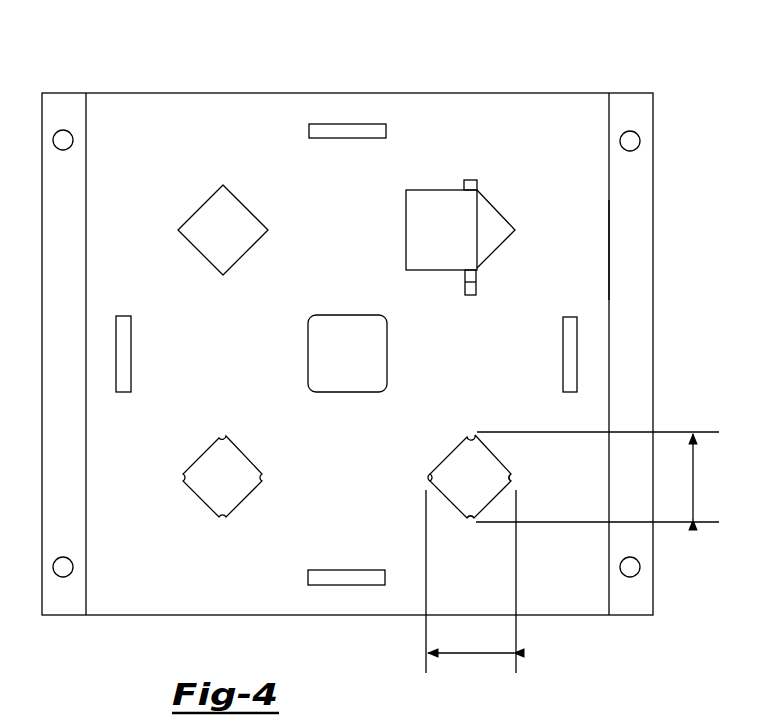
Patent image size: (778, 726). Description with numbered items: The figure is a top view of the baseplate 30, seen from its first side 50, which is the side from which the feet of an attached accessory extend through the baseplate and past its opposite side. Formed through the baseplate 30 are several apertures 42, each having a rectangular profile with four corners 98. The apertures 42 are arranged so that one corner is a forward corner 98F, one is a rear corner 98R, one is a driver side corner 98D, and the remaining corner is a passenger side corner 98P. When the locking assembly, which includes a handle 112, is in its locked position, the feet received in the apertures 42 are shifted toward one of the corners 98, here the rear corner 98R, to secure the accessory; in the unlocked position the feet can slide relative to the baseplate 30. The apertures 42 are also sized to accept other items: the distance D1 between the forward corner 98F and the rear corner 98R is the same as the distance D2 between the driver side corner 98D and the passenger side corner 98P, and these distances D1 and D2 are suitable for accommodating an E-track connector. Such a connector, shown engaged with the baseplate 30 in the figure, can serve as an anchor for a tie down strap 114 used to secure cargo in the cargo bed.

The baseplate 30 is at (497, 114).
The first side 50 is at (592, 252).
The apertures 42 is at (206, 229).
The tie down strap 114 is at (427, 250).
The handle 112 is at (478, 287).
The corners 98 is at (228, 437).
The driver side corner 98D is at (478, 436).
The rear corner 98R is at (425, 487).
The passenger side corner 98P is at (470, 522).
The forward corner 98F is at (516, 487).
The distance from forward corner to rear corner D1 is at (693, 477).
The distance from driver side corner to passenger side corner D2 is at (476, 650).